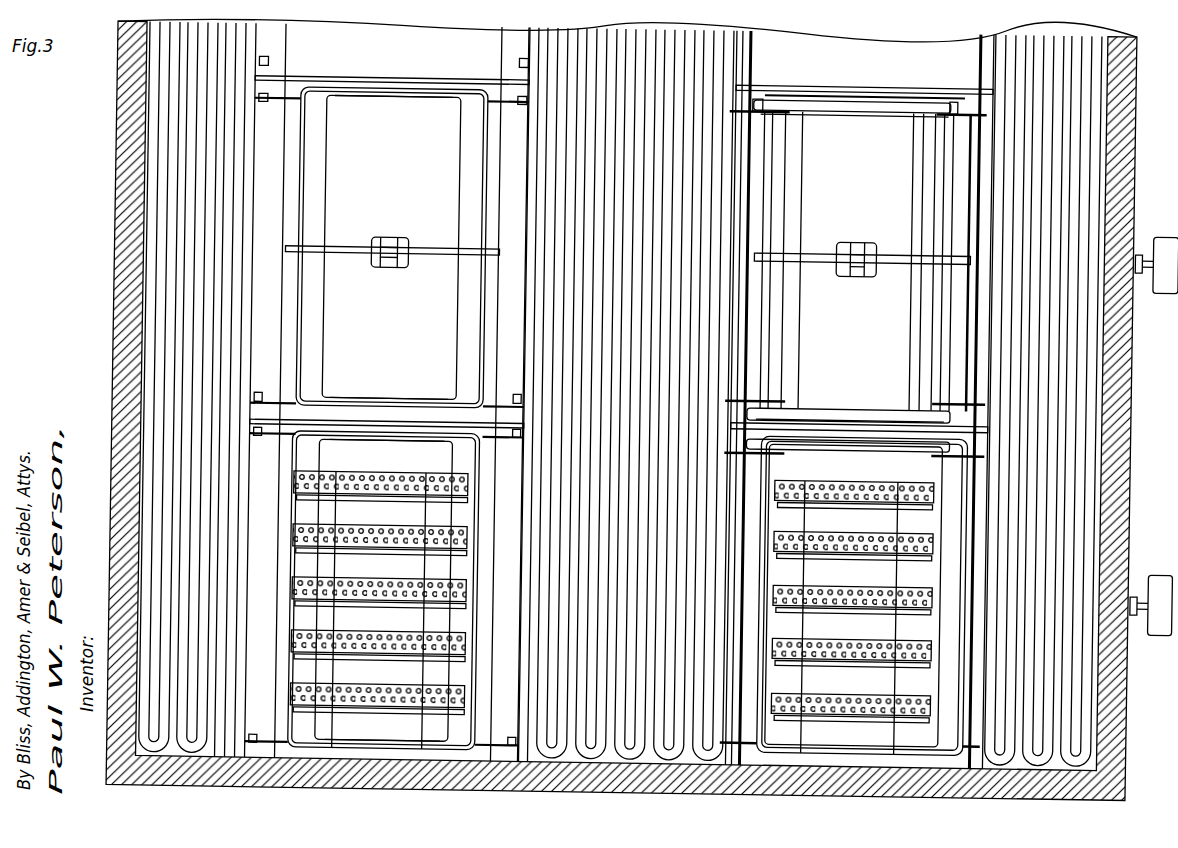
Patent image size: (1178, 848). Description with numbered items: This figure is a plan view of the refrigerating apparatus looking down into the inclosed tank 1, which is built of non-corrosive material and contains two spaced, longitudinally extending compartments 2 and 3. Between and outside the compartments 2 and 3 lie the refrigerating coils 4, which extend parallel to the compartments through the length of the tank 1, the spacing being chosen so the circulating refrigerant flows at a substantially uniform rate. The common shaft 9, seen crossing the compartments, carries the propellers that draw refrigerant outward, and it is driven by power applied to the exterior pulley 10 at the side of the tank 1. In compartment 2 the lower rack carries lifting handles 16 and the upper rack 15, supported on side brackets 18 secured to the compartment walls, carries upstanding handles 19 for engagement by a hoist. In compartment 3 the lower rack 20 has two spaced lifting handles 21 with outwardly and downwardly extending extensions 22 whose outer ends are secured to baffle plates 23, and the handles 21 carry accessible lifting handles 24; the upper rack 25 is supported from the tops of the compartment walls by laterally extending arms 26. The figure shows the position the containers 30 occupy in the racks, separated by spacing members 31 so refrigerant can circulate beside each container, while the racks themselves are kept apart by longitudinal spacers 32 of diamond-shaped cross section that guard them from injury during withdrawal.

The inclosed tank 1 is at (1122, 340).
The compartment 2 is at (387, 392).
The compartment 3 is at (859, 400).
The refrigerating coils 4 is at (576, 345).
The common shaft 9 is at (403, 268).
The exterior pulley 10 is at (1163, 232).
The upper rack 15 is at (420, 108).
The lifting handles 16 is at (396, 107).
The side brackets 18 is at (256, 110).
The upstanding handles 19 is at (326, 169).
The lower rack 20 is at (860, 96).
The lifting handles 21 is at (797, 167).
The extensions 22 is at (757, 97).
The baffle plates 23 is at (757, 226).
The lifting handles 24 is at (836, 107).
The upper rack 25 is at (874, 105).
The laterally extending arms 26 is at (758, 400).
The containers 30 is at (402, 554).
The spacing members 31 is at (428, 516).
The longitudinal spacers 32 is at (831, 85).